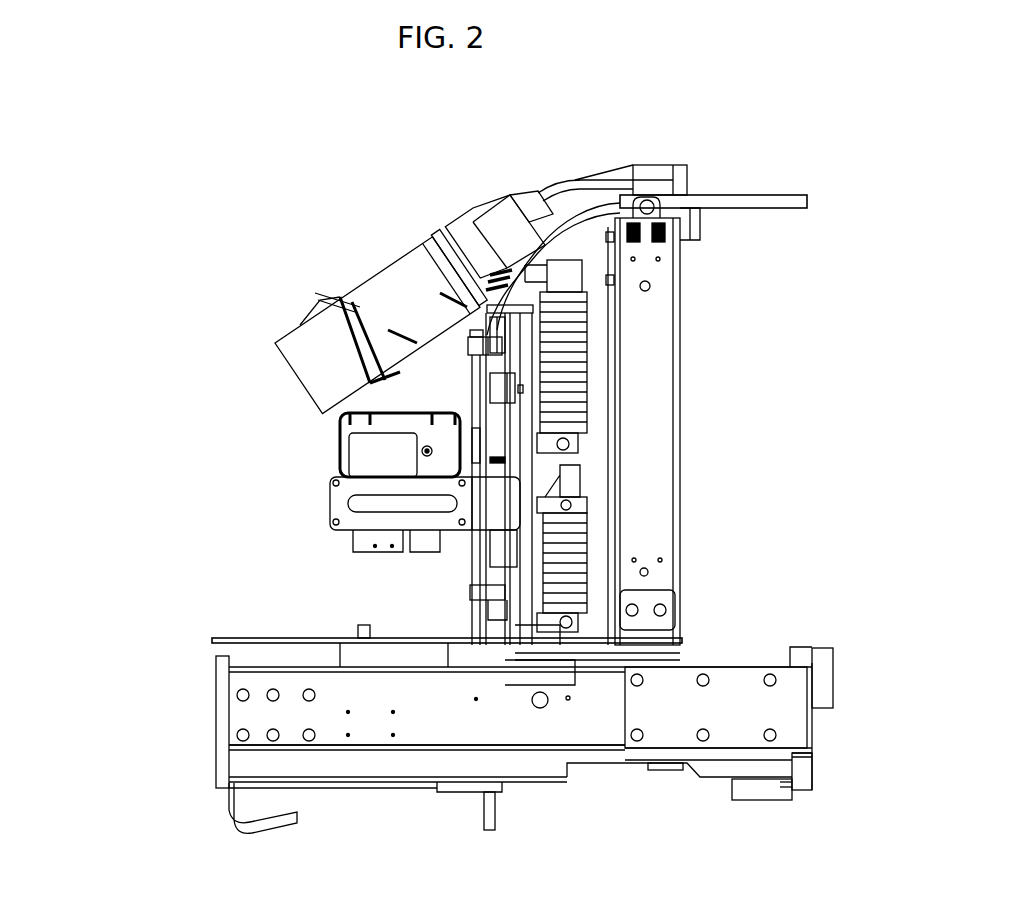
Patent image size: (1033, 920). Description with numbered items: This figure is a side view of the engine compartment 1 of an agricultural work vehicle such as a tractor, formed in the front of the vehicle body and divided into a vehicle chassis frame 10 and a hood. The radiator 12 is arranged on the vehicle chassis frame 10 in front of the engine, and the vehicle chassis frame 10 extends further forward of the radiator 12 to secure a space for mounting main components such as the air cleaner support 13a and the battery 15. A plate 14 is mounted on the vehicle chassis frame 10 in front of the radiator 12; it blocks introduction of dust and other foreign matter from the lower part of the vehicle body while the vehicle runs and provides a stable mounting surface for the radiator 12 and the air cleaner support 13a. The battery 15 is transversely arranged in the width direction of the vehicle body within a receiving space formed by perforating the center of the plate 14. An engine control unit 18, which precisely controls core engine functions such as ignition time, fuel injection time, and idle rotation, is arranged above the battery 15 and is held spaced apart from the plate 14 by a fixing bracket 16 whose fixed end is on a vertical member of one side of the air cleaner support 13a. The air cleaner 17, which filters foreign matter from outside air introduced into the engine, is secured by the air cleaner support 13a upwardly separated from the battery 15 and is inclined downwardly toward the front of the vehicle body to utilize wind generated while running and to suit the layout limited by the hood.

The engine compartment 1 is at (203, 298).
The vehicle chassis frame 10 is at (523, 723).
The radiator 12 is at (645, 347).
The air cleaner support 13a is at (527, 467).
The plate 14 is at (235, 640).
The battery 15 is at (385, 653).
The fixing bracket 16 is at (330, 503).
The air cleaner 17 is at (398, 288).
The engine control unit 18 is at (372, 452).